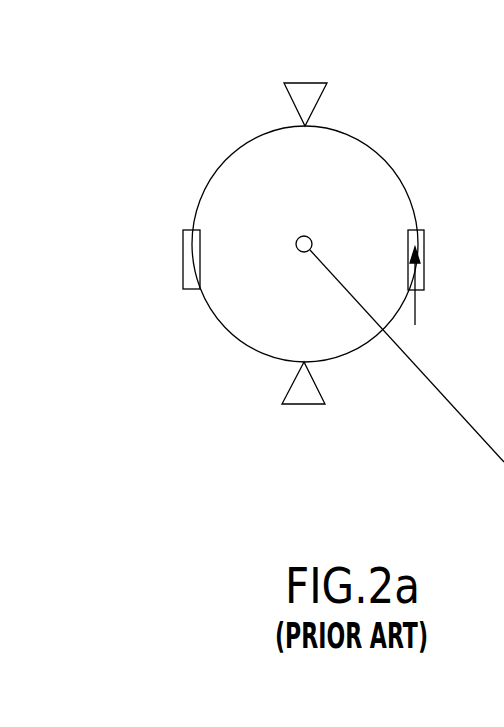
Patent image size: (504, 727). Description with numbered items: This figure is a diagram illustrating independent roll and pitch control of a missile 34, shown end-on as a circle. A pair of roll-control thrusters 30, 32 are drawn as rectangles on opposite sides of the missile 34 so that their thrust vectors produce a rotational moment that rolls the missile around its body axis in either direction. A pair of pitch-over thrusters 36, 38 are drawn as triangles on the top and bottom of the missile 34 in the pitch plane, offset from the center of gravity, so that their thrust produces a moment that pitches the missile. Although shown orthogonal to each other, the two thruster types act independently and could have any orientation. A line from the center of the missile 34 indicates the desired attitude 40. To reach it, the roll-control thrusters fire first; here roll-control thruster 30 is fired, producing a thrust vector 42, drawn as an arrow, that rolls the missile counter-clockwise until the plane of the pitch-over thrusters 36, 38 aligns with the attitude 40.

The roll-control thruster 30 is at (424, 242).
The roll-control thruster 32 is at (183, 253).
The missile 34 is at (220, 165).
The pitch-over thruster 36 is at (322, 97).
The pitch-over thruster 38 is at (292, 383).
The attitude 40 is at (436, 391).
The thrust vector 42 is at (415, 314).